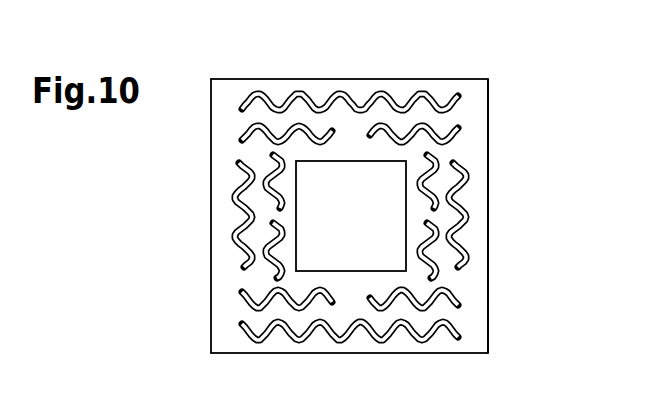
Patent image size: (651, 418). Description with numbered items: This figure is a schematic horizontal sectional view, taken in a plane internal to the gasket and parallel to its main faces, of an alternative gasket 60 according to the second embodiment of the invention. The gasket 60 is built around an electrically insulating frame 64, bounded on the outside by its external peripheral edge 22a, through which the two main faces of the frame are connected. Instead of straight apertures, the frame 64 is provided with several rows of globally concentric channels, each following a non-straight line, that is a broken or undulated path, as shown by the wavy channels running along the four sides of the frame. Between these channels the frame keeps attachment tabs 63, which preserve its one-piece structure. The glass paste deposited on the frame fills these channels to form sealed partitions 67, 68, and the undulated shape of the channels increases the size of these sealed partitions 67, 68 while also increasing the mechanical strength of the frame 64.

The gasket 60 is at (141, 243).
The external peripheral edge 22a is at (488, 127).
The attachment tabs 63 is at (438, 213).
The frame 64 is at (501, 257).
The sealed partitions 67 is at (436, 101).
The sealed partitions 68 is at (243, 303).